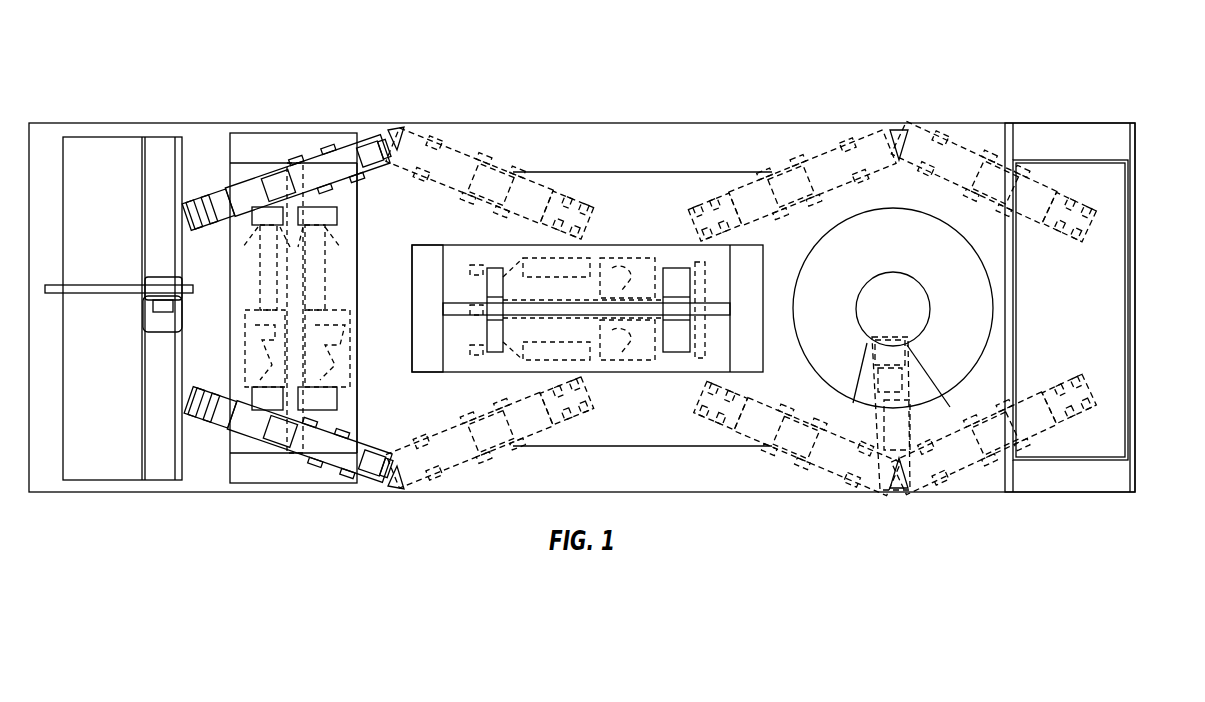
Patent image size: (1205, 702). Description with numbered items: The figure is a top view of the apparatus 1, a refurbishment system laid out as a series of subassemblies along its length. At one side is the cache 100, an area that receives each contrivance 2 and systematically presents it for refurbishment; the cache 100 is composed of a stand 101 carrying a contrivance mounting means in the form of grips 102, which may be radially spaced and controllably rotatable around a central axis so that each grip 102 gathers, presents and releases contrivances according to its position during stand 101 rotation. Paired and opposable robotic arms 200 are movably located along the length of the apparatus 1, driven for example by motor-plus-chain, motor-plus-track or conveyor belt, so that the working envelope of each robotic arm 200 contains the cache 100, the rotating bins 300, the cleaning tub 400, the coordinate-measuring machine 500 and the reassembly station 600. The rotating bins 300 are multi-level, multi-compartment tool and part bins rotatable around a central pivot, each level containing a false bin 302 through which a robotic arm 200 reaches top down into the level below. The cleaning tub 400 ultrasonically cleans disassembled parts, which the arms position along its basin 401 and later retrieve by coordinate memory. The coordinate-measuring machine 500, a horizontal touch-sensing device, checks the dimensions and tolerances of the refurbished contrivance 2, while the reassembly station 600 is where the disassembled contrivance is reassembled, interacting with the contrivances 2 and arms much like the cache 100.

The apparatus 1 is at (632, 70).
The contrivance 2 is at (607, 348).
The cache 100 is at (285, 273).
The stand 101 is at (435, 290).
The grips 102 is at (677, 345).
The robotic arms 200 is at (373, 150).
The rotating bins 300 is at (907, 269).
The false bin 302 is at (928, 383).
The cleaning tub 400 is at (1118, 258).
The basin 401 is at (1088, 322).
The coordinate-measuring machine 500 is at (143, 223).
The reassembly station 600 is at (660, 253).